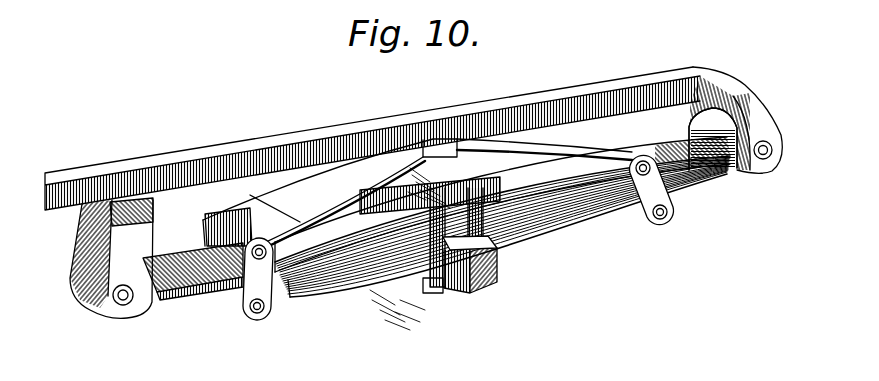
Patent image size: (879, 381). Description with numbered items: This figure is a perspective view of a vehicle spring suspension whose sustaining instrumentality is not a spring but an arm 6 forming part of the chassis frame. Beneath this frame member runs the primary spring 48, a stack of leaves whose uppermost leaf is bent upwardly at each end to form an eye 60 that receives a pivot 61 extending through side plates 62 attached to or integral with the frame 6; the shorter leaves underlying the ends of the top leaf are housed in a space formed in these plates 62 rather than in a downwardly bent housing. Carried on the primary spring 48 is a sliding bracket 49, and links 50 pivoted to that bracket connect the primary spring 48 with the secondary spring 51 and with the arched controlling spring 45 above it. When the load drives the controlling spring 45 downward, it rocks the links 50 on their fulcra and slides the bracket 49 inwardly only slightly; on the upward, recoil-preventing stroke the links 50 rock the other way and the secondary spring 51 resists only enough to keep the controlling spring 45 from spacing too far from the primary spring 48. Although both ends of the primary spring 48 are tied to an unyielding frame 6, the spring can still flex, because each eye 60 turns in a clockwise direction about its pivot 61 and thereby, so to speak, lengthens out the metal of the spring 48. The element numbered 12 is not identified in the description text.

The arm 6 is at (170, 156).
The axle block 12 is at (481, 291).
The controlling spring 45 is at (547, 144).
The primary spring-member 48 is at (502, 217).
The sliding bracket 49 is at (193, 249).
The links 50 is at (273, 297).
The secondary spring 51 is at (371, 266).
The eye 60 is at (727, 107).
The pivot 61 is at (773, 163).
The side plates 62 is at (426, 192).